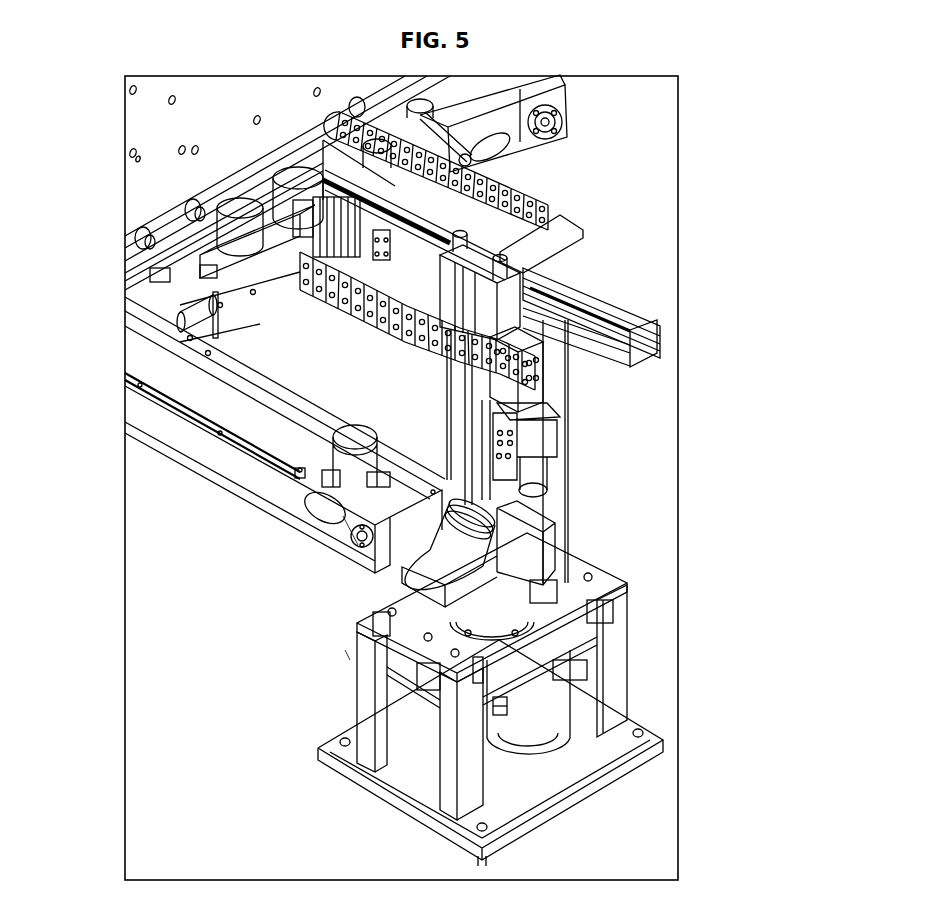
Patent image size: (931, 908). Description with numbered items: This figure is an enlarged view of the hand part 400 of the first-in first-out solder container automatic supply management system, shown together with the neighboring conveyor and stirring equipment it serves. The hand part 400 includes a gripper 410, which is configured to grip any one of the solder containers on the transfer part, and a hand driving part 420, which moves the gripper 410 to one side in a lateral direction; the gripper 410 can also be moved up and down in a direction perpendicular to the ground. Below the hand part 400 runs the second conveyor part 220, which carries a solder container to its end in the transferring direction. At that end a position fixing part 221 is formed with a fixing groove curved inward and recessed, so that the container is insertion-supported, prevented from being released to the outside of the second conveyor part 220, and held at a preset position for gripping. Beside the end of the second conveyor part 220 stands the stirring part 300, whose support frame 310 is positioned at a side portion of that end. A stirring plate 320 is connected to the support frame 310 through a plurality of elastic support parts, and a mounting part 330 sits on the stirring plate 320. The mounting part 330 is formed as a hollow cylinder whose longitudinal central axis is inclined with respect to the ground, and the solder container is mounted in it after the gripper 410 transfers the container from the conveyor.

The second conveyor part 220 is at (228, 410).
The position fixing part 221 is at (367, 499).
The stirring part 300 is at (326, 674).
The support frame 310 is at (620, 688).
The stirring plate 320 is at (597, 580).
The mounting part 330 is at (480, 542).
The hand part 400 is at (564, 347).
The gripper 410 is at (625, 412).
The hand driving part 420 is at (543, 203).